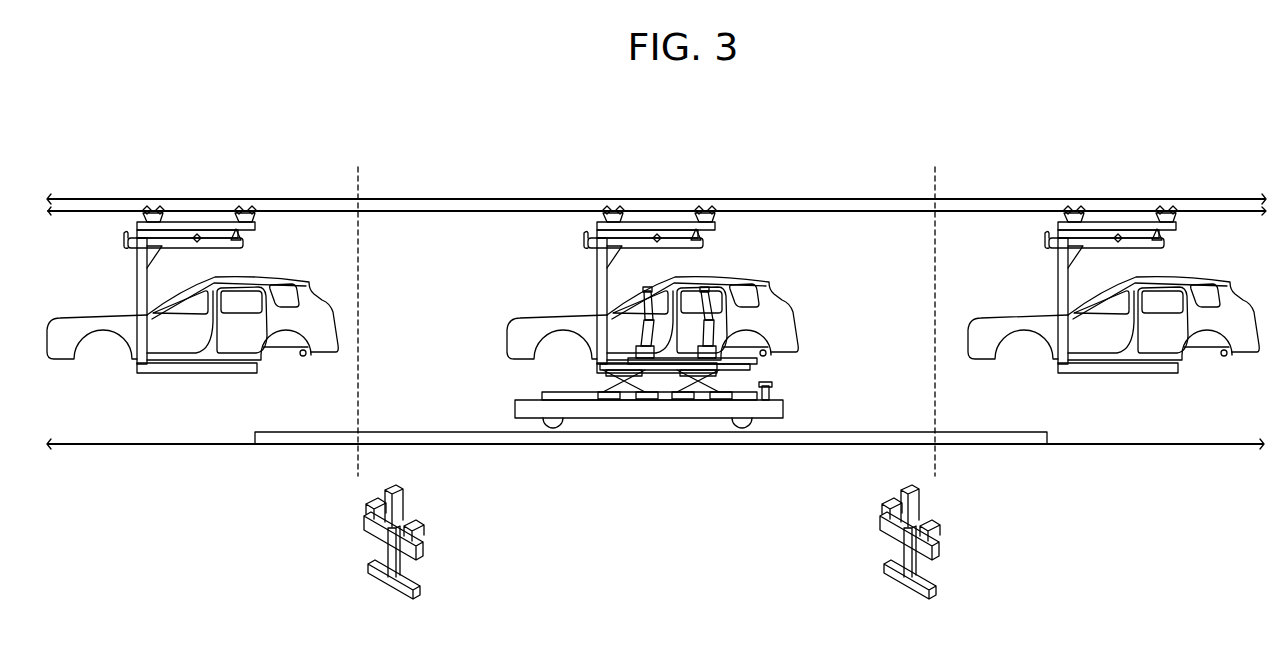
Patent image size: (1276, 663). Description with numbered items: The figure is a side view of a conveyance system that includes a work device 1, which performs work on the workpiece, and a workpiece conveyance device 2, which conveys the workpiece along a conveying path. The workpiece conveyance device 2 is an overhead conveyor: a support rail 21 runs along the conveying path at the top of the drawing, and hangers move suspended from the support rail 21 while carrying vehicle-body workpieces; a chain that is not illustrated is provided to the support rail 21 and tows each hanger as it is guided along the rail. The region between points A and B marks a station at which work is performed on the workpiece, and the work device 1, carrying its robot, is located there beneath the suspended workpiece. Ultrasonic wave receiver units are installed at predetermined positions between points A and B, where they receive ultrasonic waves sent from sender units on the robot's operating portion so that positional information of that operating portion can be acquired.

The work device 1 is at (705, 458).
The workpiece conveyance device 2 is at (306, 118).
The support rail 21 is at (813, 199).
The point A is at (934, 309).
The point B is at (359, 309).